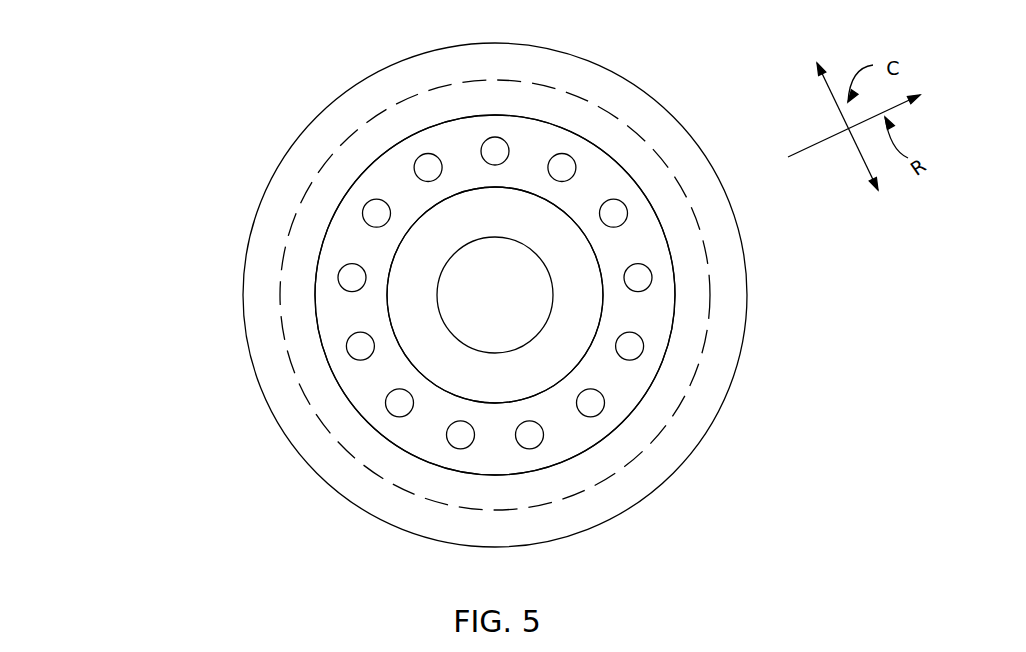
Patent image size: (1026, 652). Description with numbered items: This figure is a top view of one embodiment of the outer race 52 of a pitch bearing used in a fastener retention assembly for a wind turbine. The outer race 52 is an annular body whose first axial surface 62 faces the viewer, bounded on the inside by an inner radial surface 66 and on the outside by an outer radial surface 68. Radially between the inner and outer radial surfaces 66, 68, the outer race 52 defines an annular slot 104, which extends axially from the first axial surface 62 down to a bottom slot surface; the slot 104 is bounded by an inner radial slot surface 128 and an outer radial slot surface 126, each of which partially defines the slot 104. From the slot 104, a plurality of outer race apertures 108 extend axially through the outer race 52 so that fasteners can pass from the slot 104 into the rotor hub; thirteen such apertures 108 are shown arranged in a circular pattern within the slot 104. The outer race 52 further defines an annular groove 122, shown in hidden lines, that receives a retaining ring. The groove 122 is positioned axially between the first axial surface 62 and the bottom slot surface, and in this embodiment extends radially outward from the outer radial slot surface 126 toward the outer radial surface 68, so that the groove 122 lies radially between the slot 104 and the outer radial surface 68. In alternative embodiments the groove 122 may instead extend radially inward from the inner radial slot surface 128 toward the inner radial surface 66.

The outer race 52 is at (130, 90).
The first axial surface 62 is at (483, 223).
The inner radial surface 66 is at (448, 327).
The outer radial surface 68 is at (243, 317).
The annular slot 104 is at (457, 160).
The outer race apertures 108 is at (500, 145).
The annular groove 122 is at (297, 212).
The outer radial slot surface 126 is at (630, 417).
The inner radial slot surface 128 is at (445, 392).